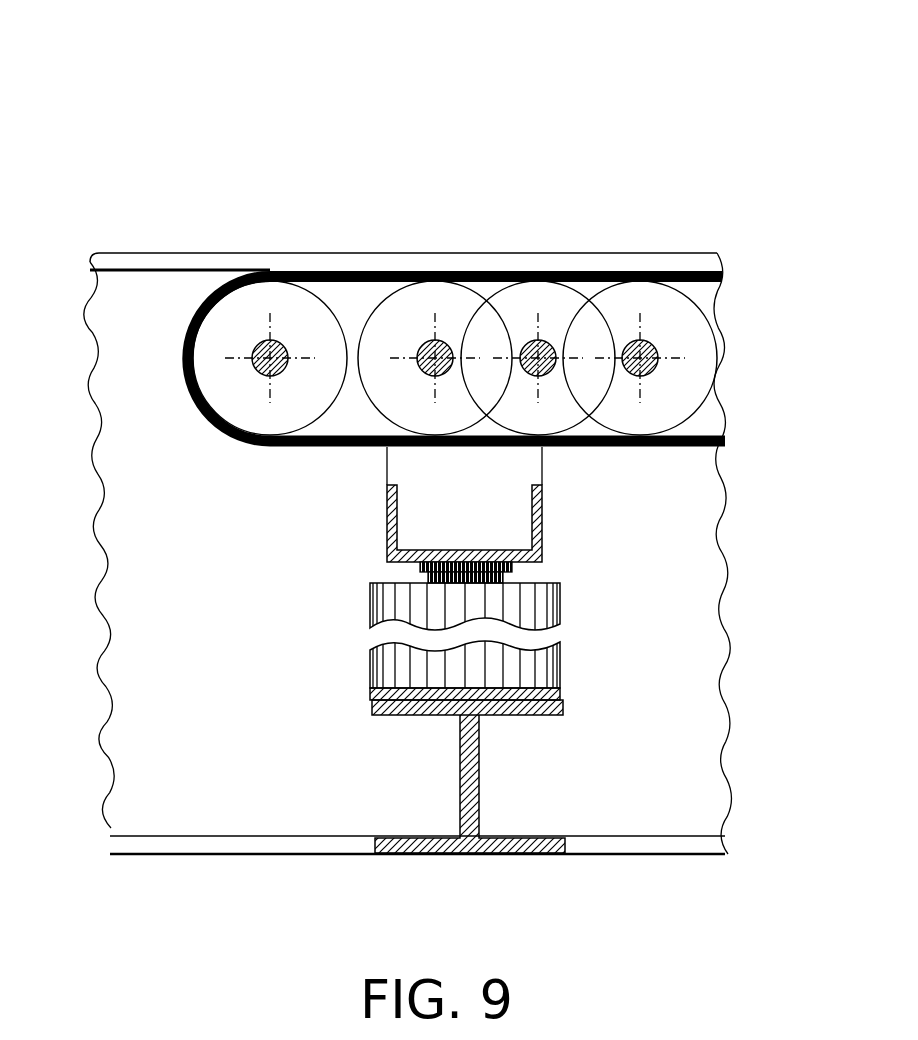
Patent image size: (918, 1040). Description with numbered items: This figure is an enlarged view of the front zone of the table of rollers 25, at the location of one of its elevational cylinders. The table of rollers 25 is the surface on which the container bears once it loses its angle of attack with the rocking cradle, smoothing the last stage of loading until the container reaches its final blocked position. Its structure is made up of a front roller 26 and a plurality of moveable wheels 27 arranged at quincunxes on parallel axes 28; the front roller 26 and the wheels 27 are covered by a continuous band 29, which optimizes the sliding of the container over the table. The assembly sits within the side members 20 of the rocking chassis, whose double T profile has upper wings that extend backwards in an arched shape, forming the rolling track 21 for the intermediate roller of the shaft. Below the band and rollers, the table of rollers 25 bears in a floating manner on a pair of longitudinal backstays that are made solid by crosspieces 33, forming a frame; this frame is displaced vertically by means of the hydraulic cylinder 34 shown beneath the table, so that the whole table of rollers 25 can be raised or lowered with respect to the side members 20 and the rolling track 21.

The side members 20 is at (142, 667).
The rolling track 21 is at (155, 258).
The table of rollers 25 is at (586, 162).
The front roller 26 is at (270, 303).
The moveable wheels 27 is at (528, 312).
The parallel axes 28 is at (652, 357).
The continuous band 29 is at (616, 270).
The crosspieces 33 is at (542, 528).
The hydraulic cylinder 34 is at (562, 670).